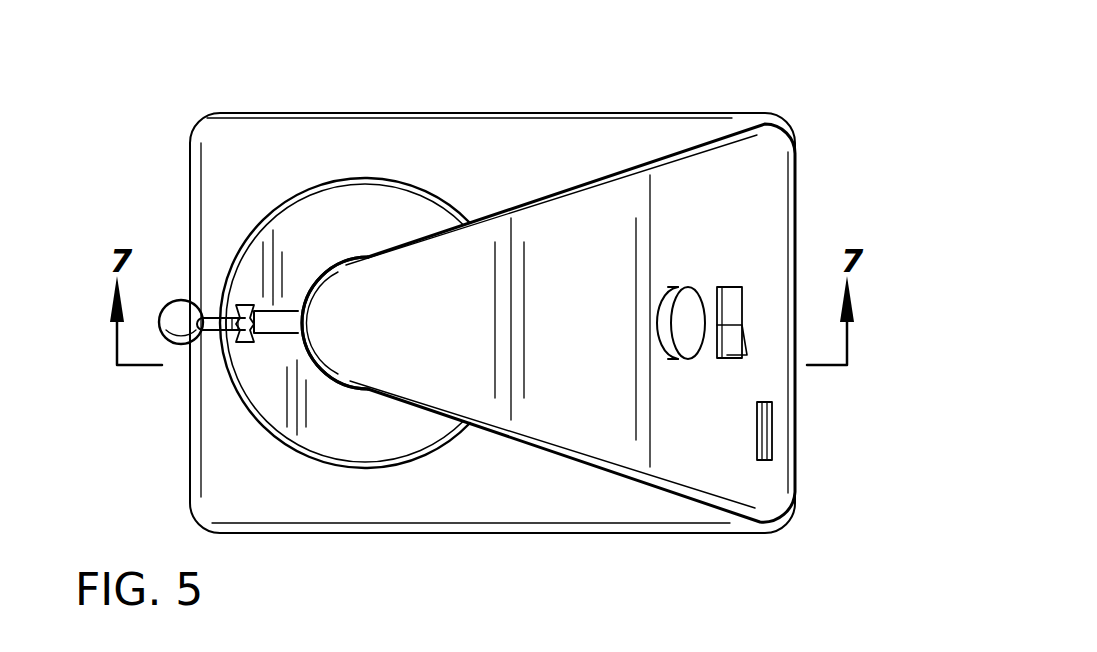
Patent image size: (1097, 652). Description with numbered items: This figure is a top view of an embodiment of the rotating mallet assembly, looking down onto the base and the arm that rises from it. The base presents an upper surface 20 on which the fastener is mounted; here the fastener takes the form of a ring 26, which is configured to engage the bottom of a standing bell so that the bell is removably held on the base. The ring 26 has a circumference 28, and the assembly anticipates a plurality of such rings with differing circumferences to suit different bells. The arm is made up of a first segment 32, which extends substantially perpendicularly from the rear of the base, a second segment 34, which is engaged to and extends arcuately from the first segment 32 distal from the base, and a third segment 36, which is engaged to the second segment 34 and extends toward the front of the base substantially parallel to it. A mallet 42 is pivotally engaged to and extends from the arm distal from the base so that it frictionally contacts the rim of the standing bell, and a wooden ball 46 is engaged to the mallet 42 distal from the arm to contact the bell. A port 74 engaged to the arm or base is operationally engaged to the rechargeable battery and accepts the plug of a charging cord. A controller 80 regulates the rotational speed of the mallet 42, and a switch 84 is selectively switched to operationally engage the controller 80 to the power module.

The upper surface 20 is at (518, 184).
The ring 26 is at (263, 217).
The circumference 28 is at (351, 178).
The first segment 32 is at (783, 222).
The second segment 34 is at (612, 246).
The third segment 36 is at (417, 267).
The mallet 42 is at (247, 340).
The ball 46 is at (178, 316).
The port 74 is at (762, 443).
The controller 80 is at (683, 338).
The switch 84 is at (728, 353).